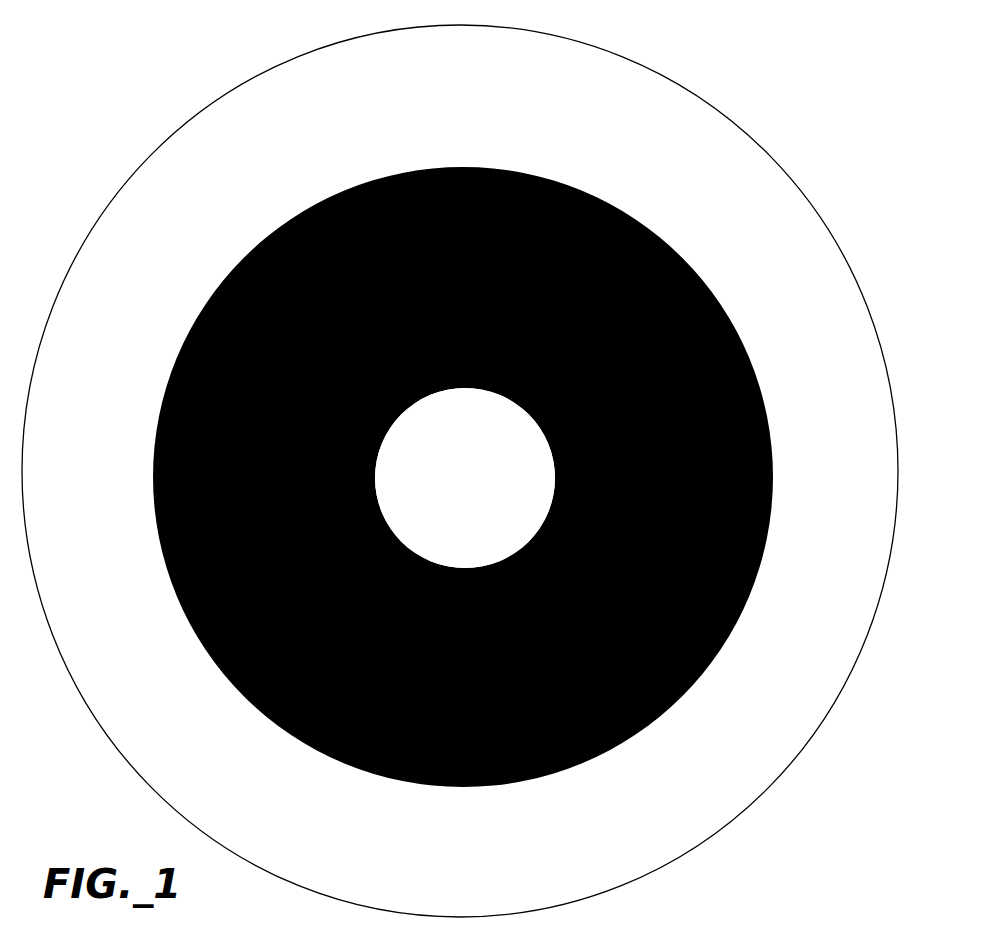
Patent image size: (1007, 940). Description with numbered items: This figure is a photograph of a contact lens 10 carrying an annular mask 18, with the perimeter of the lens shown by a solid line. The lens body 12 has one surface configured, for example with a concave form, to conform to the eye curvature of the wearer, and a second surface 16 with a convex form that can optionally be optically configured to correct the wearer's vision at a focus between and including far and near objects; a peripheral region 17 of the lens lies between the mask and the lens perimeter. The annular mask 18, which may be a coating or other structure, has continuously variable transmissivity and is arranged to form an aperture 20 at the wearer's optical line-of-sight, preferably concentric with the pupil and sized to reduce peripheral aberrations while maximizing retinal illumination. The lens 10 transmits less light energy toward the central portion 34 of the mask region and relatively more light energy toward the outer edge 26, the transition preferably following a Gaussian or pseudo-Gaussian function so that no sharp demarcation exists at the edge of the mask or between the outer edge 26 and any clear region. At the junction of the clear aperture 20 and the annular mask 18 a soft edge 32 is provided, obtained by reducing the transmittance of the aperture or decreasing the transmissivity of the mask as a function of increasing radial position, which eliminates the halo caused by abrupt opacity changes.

The contact lens 10 is at (460, 471).
The lens body 12 is at (237, 84).
The second surface 16 is at (476, 90).
The peripheral region 17 is at (155, 193).
The annular mask 18 is at (720, 417).
The aperture 20 is at (458, 467).
The outer edge 26 is at (757, 592).
The soft edge 32 is at (527, 445).
The central portion 34 is at (677, 643).